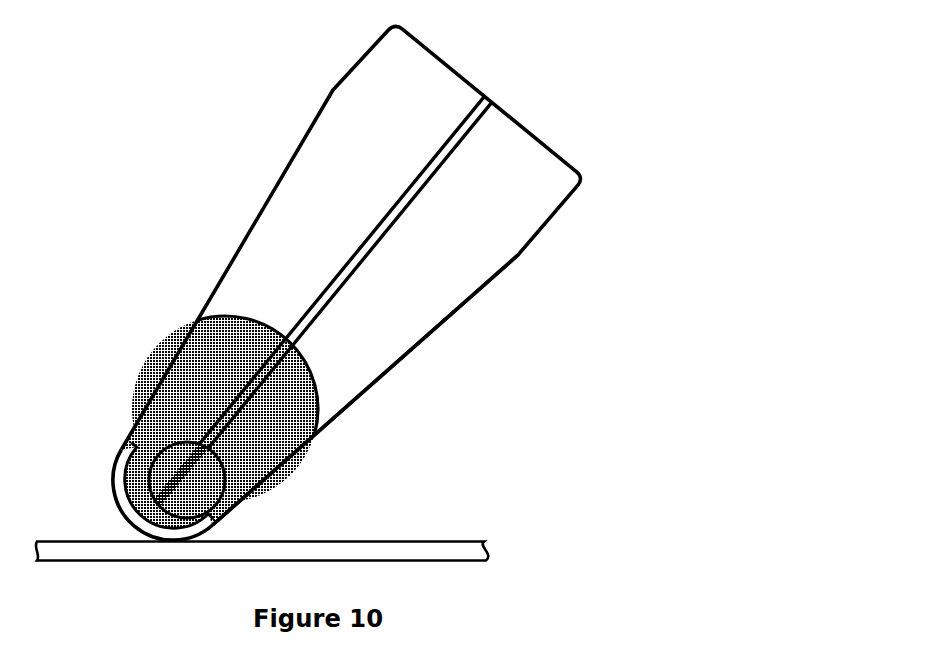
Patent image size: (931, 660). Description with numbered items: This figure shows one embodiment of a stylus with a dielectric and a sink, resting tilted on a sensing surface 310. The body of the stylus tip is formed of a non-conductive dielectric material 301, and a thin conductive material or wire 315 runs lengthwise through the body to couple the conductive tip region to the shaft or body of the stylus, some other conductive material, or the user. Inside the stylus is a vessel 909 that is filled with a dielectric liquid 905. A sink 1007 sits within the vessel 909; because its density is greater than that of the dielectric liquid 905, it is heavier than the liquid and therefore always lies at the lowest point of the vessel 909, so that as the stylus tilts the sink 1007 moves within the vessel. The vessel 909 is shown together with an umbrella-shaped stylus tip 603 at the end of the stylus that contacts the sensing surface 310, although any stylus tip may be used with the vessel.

The non-conductive dielectric material 301 is at (318, 126).
The thin conductive material or wire 315 is at (383, 237).
The dielectric liquid 905 is at (150, 403).
The vessel 909 is at (321, 411).
The umbrella-shaped stylus tip 603 is at (112, 465).
The sink 1007 is at (222, 489).
The sensing surface 310 is at (467, 551).